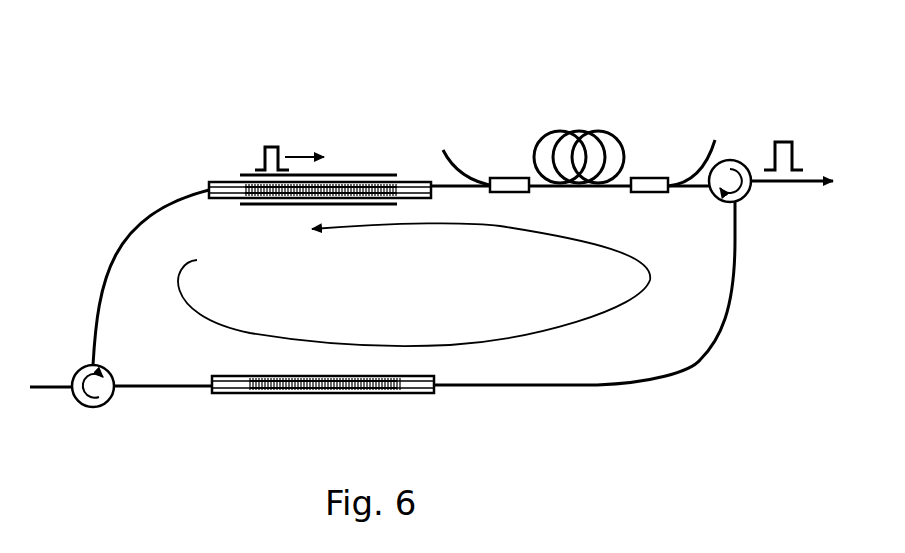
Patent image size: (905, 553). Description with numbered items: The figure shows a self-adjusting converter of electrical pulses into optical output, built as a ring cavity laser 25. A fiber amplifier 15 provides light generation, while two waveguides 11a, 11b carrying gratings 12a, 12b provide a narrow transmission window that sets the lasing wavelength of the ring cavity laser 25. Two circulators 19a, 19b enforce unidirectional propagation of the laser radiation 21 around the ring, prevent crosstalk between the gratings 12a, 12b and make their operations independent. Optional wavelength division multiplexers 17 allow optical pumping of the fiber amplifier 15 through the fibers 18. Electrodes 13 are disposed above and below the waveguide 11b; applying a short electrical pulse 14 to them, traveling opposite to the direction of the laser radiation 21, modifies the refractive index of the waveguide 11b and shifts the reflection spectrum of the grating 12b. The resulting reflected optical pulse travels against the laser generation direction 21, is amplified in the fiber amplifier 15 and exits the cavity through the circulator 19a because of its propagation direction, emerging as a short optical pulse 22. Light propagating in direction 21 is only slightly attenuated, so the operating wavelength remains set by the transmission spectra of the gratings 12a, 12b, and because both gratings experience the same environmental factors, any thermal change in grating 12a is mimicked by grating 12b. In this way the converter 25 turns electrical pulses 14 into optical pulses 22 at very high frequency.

The ring cavity laser 25 is at (98, 78).
The waveguide 11a is at (219, 395).
The waveguide 11b is at (220, 201).
The grating 12a is at (317, 395).
The grating 12b is at (398, 181).
The electrodes 13 is at (234, 194).
The electrical pulse 14 is at (274, 146).
The fiber amplifier 15 is at (613, 127).
The wavelength division multiplexers 17 is at (506, 176).
The fibers 18 is at (452, 144).
The circulator 19a is at (746, 159).
The circulator 19b is at (77, 362).
The laser radiation 21 is at (414, 284).
The optical pulses 22 is at (810, 155).